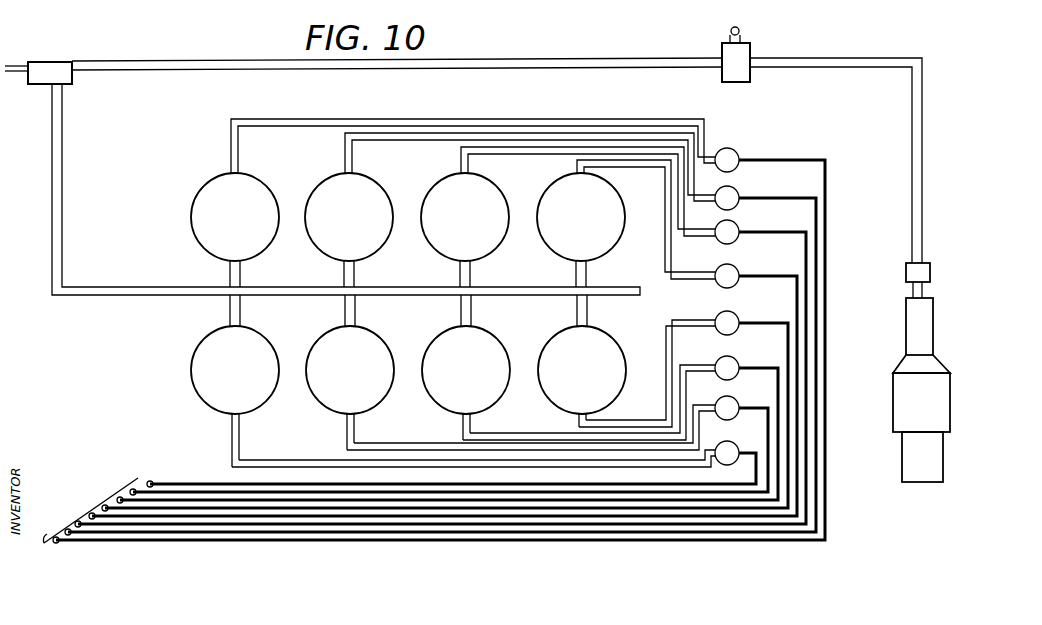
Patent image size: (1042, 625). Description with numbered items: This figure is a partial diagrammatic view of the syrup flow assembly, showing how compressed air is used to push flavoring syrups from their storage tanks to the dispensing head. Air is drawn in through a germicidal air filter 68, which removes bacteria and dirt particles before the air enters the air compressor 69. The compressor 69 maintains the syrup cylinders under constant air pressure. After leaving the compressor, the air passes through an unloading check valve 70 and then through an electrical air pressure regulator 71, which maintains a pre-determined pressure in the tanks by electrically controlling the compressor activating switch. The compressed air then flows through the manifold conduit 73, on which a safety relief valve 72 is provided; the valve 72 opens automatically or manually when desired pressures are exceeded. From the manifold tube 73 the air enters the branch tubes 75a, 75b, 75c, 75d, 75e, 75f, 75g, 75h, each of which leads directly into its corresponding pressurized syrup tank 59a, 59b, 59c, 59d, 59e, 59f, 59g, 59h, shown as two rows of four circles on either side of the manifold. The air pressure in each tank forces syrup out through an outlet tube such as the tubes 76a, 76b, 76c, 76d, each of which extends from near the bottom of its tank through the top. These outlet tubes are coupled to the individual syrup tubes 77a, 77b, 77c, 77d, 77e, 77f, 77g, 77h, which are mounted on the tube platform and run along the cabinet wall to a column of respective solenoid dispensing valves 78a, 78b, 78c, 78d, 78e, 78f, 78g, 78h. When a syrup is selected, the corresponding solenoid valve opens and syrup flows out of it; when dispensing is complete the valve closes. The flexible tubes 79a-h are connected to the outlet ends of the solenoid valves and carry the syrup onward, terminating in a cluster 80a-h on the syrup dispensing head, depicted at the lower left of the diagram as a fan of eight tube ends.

The safety relief valve 72 is at (60, 63).
The manifold conduit 73 is at (52, 175).
The electrical air pressure regulator 71 is at (740, 60).
The unloading check valve 70 is at (929, 277).
The air compressor 69 is at (940, 408).
The germicidal air filter 68 is at (928, 461).
The syrup tank 59a is at (582, 370).
The syrup tank 59b is at (466, 370).
The syrup tank 59c is at (350, 370).
The syrup tank 59d is at (235, 370).
The syrup tank 59e is at (235, 217).
The syrup tank 59f is at (349, 217).
The syrup tank 59g is at (465, 217).
The syrup tank 59h is at (581, 217).
The branch tube 75a is at (577, 312).
The branch tube 75b is at (461, 312).
The branch tube 75c is at (345, 312).
The branch tube 75d is at (205, 310).
The branch tube 75e is at (205, 274).
The branch tube 75f is at (322, 274).
The branch tube 75g is at (460, 276).
The branch tube 75h is at (576, 276).
The syrup outlet tube 76a is at (578, 422).
The syrup outlet tube 76b is at (462, 428).
The syrup outlet tube 76c is at (346, 425).
The syrup outlet tube 76d is at (231, 432).
The syrup tube 77a is at (640, 408).
The syrup tube 77b is at (510, 430).
The syrup tube 77c is at (403, 443).
The syrup tube 77d is at (333, 453).
The syrup tube 77e is at (405, 118).
The syrup tube 77f is at (530, 167).
The syrup tube 77g is at (588, 191).
The syrup tube 77h is at (646, 219).
The solenoid dispensing valve 78a is at (736, 314).
The solenoid dispensing valve 78b is at (736, 359).
The solenoid dispensing valve 78c is at (736, 399).
The solenoid dispensing valve 78d is at (744, 436).
The solenoid dispensing valve 78e is at (735, 150).
The solenoid dispensing valve 78f is at (736, 189).
The solenoid dispensing valve 78g is at (736, 223).
The solenoid dispensing valve 78h is at (736, 267).
The flexible tubes 79a-h is at (641, 350).
The tube cluster 80a-h is at (87, 507).